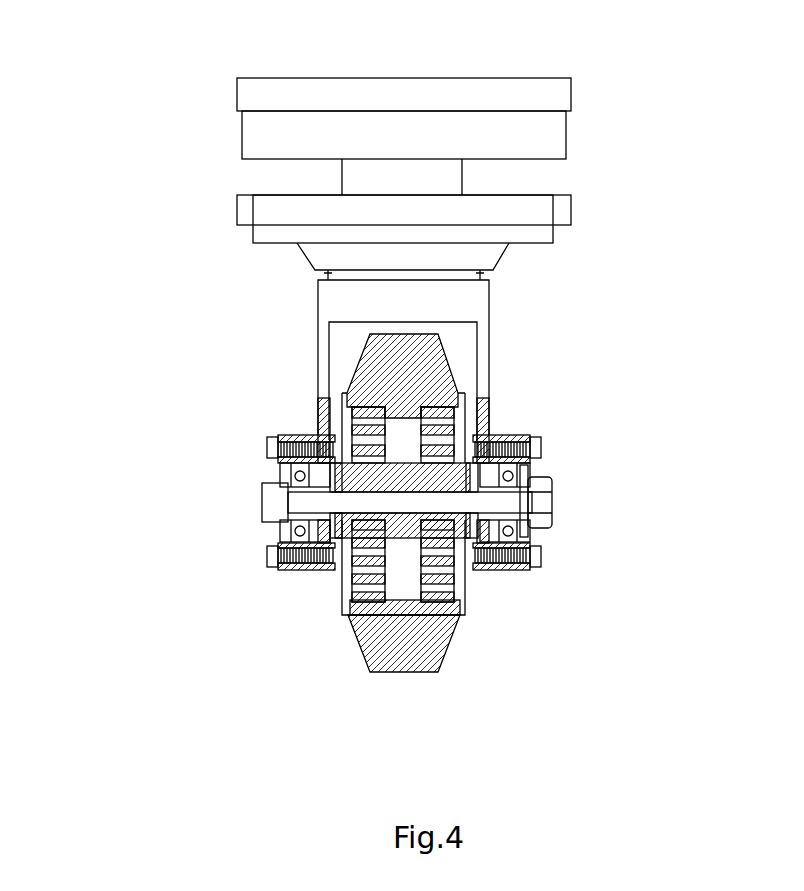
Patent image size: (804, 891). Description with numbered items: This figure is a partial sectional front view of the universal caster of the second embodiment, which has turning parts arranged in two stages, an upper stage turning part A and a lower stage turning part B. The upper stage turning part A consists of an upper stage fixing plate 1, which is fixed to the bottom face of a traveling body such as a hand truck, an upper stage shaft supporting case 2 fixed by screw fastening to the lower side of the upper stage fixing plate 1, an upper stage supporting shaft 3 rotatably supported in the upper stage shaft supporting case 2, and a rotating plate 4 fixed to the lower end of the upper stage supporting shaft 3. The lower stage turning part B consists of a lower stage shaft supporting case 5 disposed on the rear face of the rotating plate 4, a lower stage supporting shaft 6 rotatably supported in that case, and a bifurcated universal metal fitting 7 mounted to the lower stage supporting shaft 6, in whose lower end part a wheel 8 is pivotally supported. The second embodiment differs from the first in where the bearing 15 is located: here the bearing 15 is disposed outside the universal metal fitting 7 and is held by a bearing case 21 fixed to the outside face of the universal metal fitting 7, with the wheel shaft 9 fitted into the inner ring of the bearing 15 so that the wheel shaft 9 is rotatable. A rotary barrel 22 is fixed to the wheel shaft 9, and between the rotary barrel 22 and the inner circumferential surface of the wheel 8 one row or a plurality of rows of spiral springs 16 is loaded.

The upper stage turning part A is at (379, 115).
The lower stage turning part B is at (379, 250).
The upper stage fixing plate 1 is at (565, 92).
The upper stage shaft supporting case 2 is at (549, 139).
The upper stage supporting shaft 3 is at (362, 172).
The rotating plate 4 is at (565, 212).
The lower stage shaft supporting case 5 is at (492, 252).
The lower stage supporting shaft 6 is at (328, 274).
The universal metal fitting 7 is at (485, 353).
The wheel 8 is at (375, 642).
The wheel shaft 9 is at (268, 502).
The bearing 15 is at (278, 530).
The spiral spring 16 is at (358, 575).
The bearing case 21 is at (292, 572).
The rotary barrel 22 is at (403, 537).